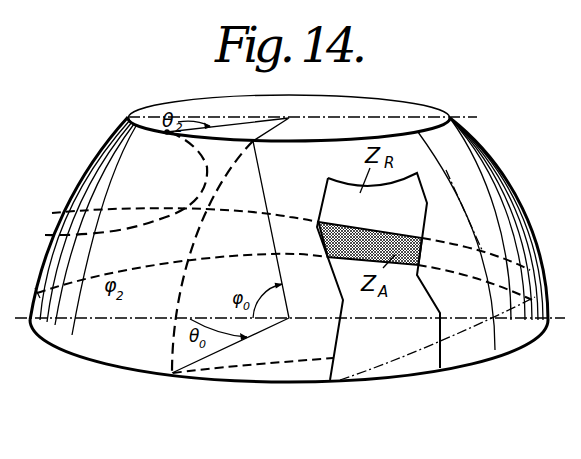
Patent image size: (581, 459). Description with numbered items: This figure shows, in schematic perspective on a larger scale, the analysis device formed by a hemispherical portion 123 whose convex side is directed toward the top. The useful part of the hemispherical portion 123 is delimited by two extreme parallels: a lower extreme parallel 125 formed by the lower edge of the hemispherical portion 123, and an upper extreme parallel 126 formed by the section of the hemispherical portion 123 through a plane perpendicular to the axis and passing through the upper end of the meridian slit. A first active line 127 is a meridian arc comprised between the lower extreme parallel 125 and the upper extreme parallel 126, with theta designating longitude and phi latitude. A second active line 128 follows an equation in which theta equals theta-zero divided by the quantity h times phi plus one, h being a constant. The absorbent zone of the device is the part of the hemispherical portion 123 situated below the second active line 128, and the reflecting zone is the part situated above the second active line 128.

The hemispherical portion 123 is at (524, 206).
The lower extreme parallel 125 is at (296, 383).
The upper extreme parallel 126 is at (347, 142).
The first active line 127 is at (180, 283).
The second active line 128 is at (200, 178).